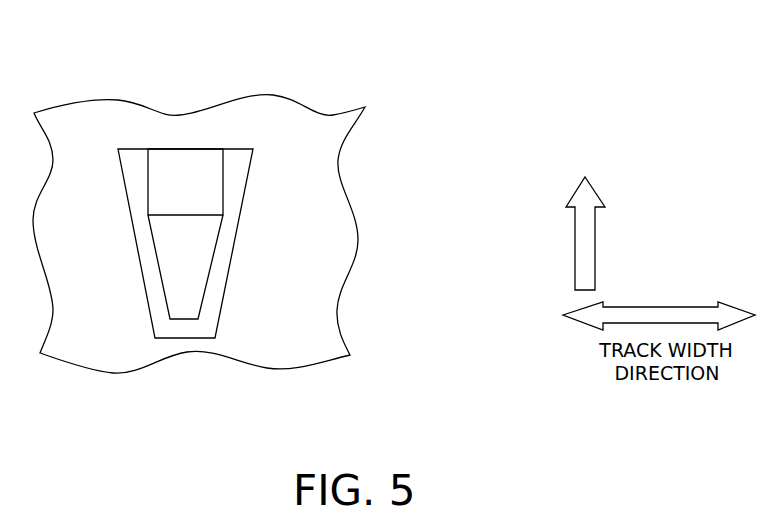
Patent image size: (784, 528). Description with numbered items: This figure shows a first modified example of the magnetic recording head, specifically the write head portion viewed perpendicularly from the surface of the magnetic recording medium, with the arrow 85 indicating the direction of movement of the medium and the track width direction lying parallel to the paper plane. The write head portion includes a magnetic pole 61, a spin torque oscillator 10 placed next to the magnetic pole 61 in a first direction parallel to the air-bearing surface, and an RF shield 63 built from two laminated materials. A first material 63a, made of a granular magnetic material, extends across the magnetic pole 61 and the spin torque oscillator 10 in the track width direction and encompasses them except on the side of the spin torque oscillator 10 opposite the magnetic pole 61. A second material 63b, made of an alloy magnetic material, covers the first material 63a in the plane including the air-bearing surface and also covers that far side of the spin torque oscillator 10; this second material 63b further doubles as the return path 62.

The spin torque oscillator 10 is at (282, 251).
The magnetic pole 61 is at (188, 280).
The return path 62 is at (249, 130).
The RF shield 63 is at (333, 234).
The first material 63a is at (235, 185).
The second material 63b is at (262, 258).
The arrow 85 is at (585, 177).